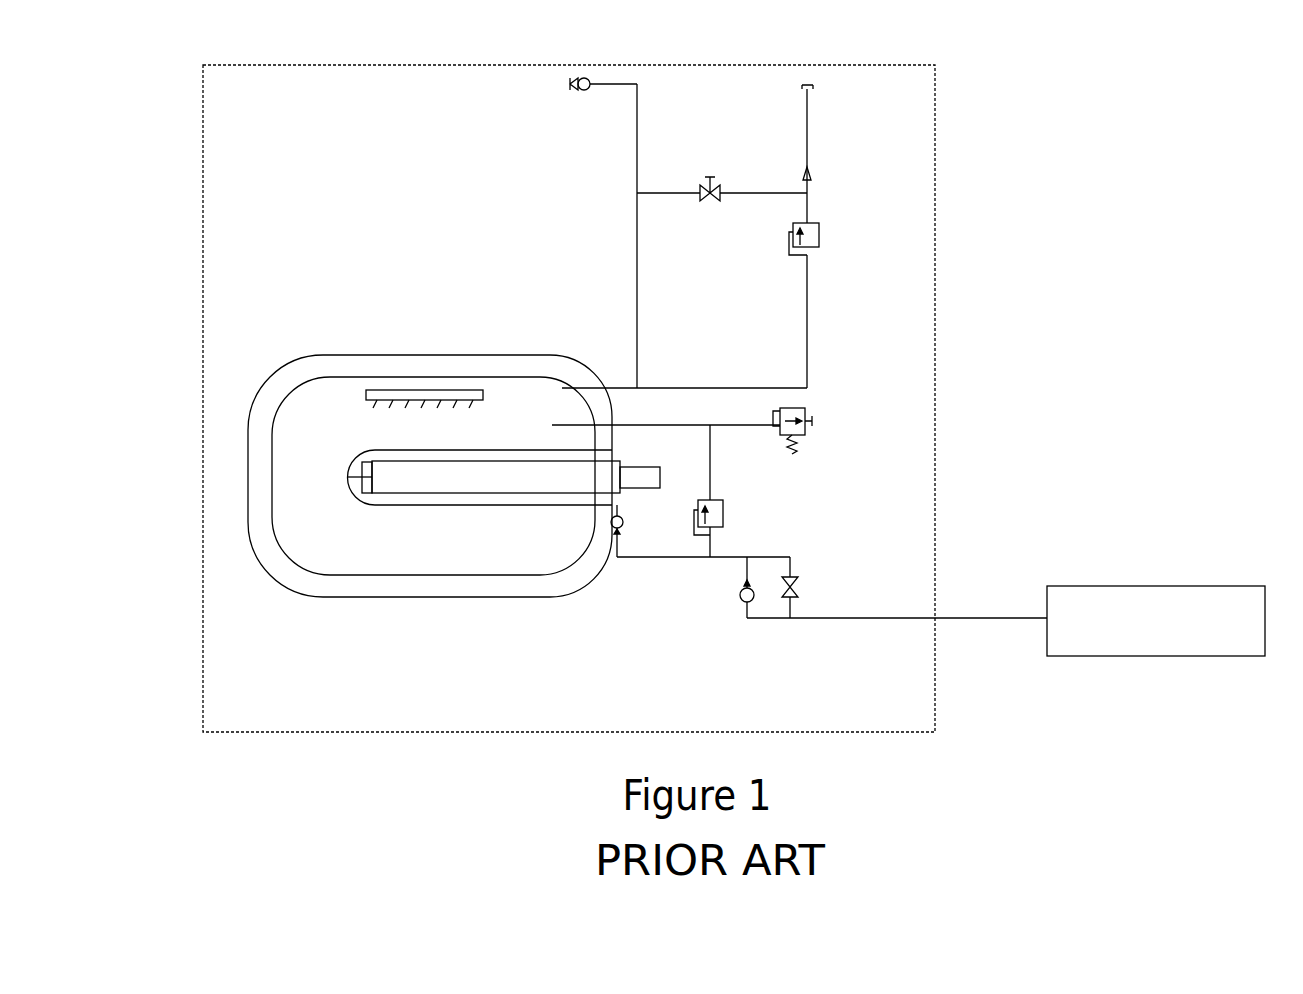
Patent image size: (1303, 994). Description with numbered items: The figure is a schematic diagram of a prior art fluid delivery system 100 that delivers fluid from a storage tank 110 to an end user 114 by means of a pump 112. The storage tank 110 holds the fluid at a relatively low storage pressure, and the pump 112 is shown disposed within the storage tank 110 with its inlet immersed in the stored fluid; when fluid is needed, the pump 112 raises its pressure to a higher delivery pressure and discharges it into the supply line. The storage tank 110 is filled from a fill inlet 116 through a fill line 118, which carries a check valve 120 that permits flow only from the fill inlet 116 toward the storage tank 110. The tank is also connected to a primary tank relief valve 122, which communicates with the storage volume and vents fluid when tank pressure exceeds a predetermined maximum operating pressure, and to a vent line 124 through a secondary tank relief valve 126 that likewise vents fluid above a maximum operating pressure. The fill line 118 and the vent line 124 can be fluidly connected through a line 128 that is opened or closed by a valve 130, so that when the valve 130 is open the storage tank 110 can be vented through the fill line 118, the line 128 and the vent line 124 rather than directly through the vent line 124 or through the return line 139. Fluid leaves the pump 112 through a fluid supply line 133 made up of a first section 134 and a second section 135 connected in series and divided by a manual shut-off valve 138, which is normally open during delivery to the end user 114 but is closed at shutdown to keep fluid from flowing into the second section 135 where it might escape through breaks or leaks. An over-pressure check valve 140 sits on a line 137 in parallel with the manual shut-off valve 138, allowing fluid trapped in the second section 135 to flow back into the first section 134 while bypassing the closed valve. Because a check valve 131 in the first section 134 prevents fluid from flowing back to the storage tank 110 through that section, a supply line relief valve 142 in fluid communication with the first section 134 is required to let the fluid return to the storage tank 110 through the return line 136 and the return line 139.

The fluid delivery system 100 is at (940, 271).
The storage tank 110 is at (310, 580).
The pump 112 is at (435, 480).
The end user 114 is at (1167, 586).
The fill inlet 116 is at (569, 87).
The fill line 118 is at (636, 140).
The check valve 120 is at (578, 100).
The primary tank relief valve 122 is at (805, 410).
The vent line 124 is at (810, 318).
The secondary tank relief valve 126 is at (818, 225).
The line 128 is at (663, 195).
The valve 130 is at (720, 188).
The check valve 131 is at (623, 523).
The fluid supply line 133 is at (1017, 617).
The first section 134 is at (680, 558).
The second section 135 is at (885, 620).
The return line 136 is at (712, 470).
The line 137 is at (765, 620).
The manual shut-off valve 138 is at (805, 590).
The return line 139 is at (645, 423).
The over-pressure check valve 140 is at (738, 594).
The supply line relief valve 142 is at (740, 512).